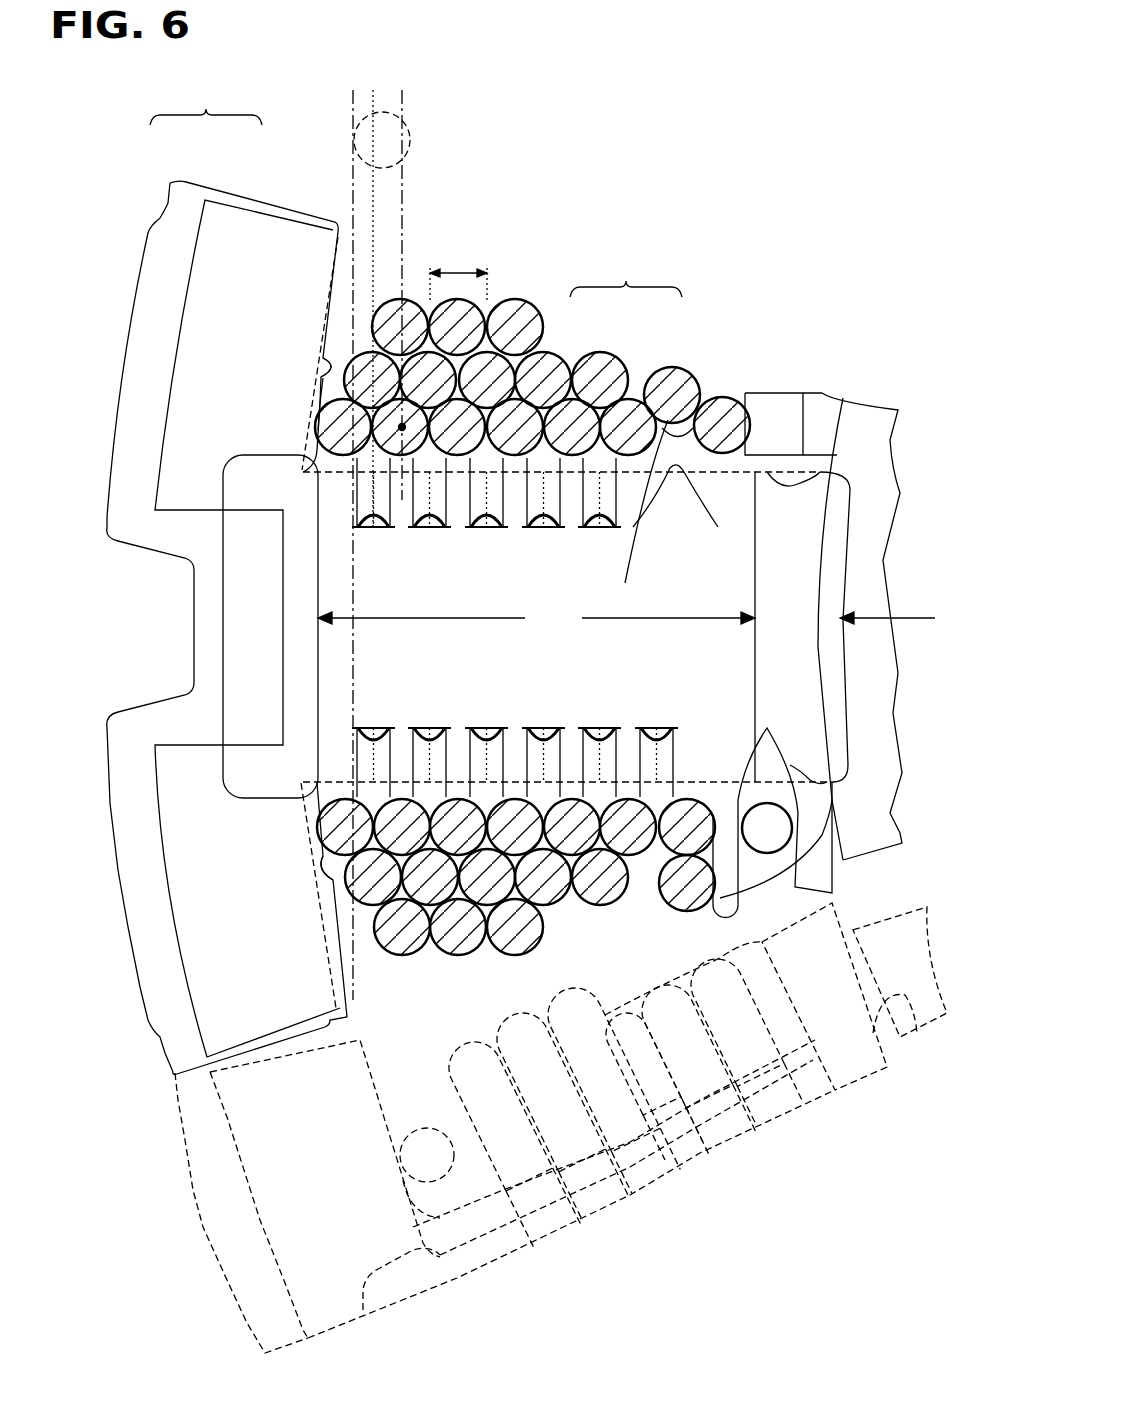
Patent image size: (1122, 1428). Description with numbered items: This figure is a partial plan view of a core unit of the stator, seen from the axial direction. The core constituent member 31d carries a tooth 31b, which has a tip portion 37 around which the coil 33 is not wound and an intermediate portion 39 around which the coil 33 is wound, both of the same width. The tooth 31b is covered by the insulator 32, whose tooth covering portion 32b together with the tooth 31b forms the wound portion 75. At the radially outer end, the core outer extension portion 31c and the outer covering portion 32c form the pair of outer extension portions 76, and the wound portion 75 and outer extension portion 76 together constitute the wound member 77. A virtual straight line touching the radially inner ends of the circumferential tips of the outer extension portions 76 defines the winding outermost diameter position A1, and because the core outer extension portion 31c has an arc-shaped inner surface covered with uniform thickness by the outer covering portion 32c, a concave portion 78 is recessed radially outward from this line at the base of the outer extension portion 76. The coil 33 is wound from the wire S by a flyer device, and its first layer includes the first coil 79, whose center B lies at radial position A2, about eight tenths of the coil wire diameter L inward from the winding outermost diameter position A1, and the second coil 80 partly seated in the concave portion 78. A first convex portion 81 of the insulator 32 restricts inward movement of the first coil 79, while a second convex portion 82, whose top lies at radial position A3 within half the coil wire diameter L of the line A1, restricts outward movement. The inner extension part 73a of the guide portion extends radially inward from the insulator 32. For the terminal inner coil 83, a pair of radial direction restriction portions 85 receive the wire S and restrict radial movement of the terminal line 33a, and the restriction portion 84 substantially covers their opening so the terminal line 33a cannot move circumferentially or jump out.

The outer extension portion 76 is at (135, 1055).
The core outer extension portion 31c is at (182, 212).
The outer covering portion 32c is at (240, 228).
The core constituent member 31d is at (112, 420).
The winding outermost diameter position A1 is at (353, 190).
The radial position of the center of the first coil A2 is at (402, 170).
The radial position of the top of the second convex portion A3 is at (373, 203).
The wire S is at (408, 130).
The coil wire diameter L is at (458, 273).
The wound member 77 is at (518, 440).
The wound portion 75 is at (513, 329).
The tooth covering portion 32b is at (577, 440).
The tooth 31b is at (640, 470).
The insulator 32 is at (697, 398).
The inner extension part 73a is at (878, 410).
The concave portion 78 is at (323, 360).
The second coil 80 is at (320, 402).
The second convex portion 82 is at (323, 437).
The center of the first coil B is at (402, 437).
The first convex portion 81 is at (460, 450).
The first coil 79 is at (400, 470).
The intermediate portion 39 is at (536, 618).
The tip portion 37 is at (860, 618).
The terminal line 33a is at (763, 822).
The restriction portion 84 is at (718, 942).
The radial direction restriction portion 85 is at (810, 843).
The coil 33 is at (547, 942).
The terminal inner coil 83 is at (523, 952).